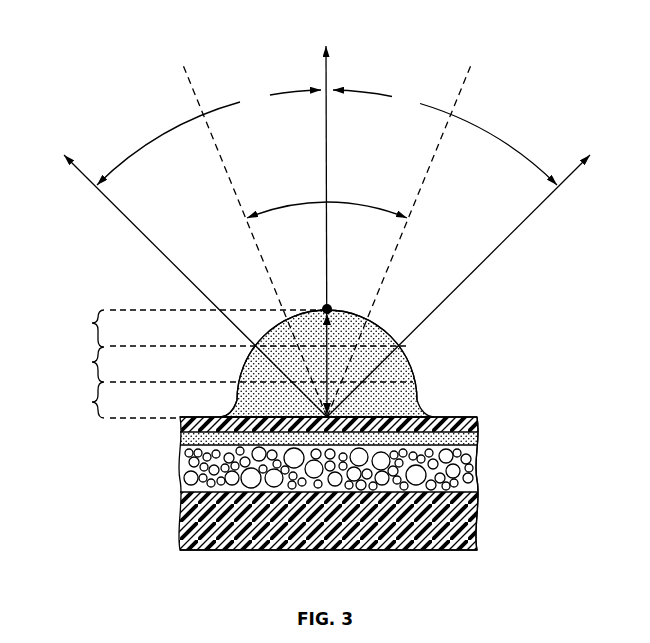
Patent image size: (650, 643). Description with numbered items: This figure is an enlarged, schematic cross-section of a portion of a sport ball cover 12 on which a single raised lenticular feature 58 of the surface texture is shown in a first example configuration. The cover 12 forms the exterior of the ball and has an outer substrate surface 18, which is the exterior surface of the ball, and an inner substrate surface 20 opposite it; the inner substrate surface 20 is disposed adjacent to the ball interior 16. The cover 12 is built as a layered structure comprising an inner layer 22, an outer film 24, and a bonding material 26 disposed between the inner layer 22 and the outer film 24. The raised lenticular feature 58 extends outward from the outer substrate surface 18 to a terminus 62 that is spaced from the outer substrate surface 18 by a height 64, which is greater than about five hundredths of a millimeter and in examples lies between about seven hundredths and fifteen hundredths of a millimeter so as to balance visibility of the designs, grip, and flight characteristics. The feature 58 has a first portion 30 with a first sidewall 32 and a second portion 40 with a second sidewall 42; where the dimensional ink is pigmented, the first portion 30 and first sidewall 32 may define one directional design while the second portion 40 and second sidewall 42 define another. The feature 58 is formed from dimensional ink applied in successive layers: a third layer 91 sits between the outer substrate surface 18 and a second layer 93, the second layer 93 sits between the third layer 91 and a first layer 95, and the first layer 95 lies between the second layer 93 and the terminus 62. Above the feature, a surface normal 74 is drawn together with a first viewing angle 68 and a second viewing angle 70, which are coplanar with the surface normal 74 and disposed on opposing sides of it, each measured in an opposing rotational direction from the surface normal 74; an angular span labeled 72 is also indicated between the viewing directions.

The cover 12 is at (127, 419).
The ball interior 16 is at (478, 525).
The outer substrate surface 18 is at (468, 414).
The inner substrate surface 20 is at (417, 508).
The inner layer 22 is at (478, 468).
The outer film 24 is at (478, 423).
The bonding material 26 is at (478, 440).
The first portion 30 is at (257, 400).
The first sidewall 32 is at (239, 369).
The second portion 40 is at (416, 394).
The second sidewall 42 is at (412, 357).
The raised lenticular feature 58 is at (355, 297).
The terminus 62 is at (322, 306).
The height 64 is at (378, 352).
The first viewing angle 68 is at (195, 253).
The second viewing angle 70 is at (458, 253).
The central emission angle 72 is at (345, 202).
The surface normal 74 is at (322, 70).
The third layer 91 is at (92, 402).
The second layer 93 is at (92, 362).
The first layer 95 is at (92, 323).